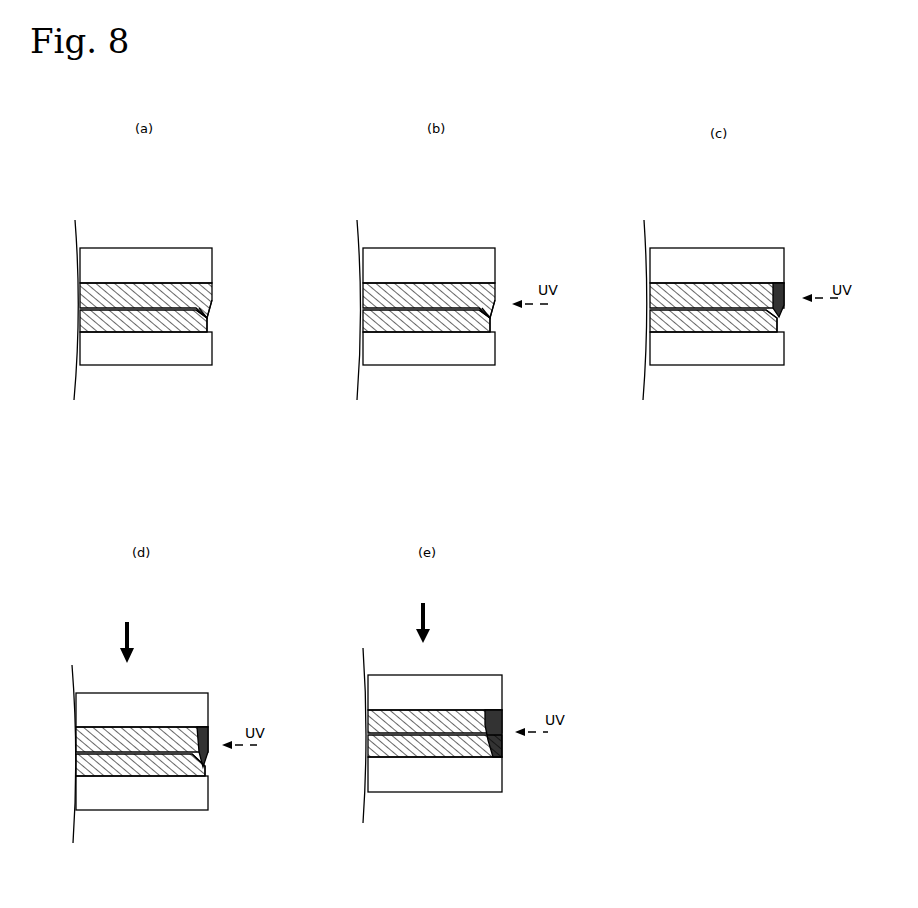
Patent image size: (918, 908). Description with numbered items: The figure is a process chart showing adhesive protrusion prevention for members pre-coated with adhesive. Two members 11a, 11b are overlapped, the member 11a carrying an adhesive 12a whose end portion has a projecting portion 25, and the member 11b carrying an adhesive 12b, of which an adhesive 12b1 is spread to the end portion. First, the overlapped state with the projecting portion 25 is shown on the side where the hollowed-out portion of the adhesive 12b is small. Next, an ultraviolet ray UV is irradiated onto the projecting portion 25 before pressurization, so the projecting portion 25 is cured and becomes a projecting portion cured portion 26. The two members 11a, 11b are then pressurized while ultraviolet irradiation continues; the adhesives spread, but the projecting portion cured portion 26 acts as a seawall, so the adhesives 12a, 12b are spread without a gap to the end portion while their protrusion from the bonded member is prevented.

The member 11a is at (155, 252).
The member 11b is at (150, 365).
The adhesive 12a is at (123, 292).
The adhesive 12b is at (110, 323).
The adhesive 12b1 is at (207, 322).
The projecting portion 25 is at (212, 300).
The projecting portion cured portion 26 is at (785, 290).